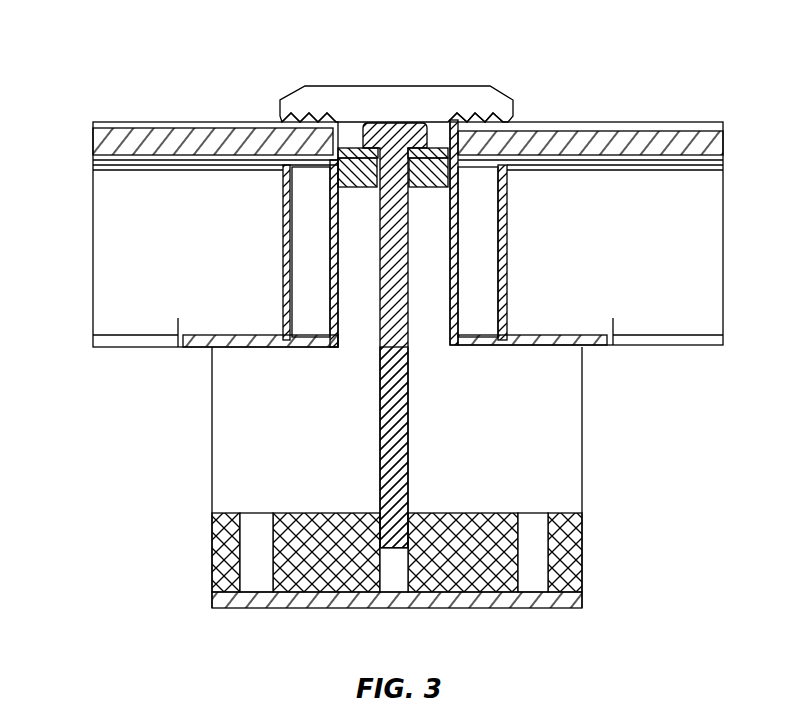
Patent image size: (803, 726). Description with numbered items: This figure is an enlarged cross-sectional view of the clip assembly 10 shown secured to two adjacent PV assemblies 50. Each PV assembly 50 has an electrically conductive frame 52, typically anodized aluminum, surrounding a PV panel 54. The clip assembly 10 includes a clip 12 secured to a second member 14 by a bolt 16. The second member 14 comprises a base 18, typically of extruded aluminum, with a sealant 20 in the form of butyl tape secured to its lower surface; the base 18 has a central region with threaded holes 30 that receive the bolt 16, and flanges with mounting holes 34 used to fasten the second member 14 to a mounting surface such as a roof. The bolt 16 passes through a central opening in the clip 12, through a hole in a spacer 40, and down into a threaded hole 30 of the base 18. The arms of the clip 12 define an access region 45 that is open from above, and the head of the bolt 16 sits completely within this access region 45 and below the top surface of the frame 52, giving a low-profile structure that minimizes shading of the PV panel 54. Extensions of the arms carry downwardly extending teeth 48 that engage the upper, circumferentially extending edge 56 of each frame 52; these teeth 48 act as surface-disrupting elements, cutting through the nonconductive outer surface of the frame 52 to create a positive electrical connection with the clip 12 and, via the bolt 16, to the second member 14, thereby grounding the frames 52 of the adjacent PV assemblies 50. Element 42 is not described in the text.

The clip assembly 10 is at (530, 50).
The clip 12 is at (440, 80).
The second member 14 is at (625, 470).
The bolt 16 is at (378, 440).
The base 18 is at (590, 538).
The sealant 20 is at (575, 600).
The threaded hole 30 is at (392, 578).
The mounting hole 34 is at (533, 582).
The spacer 40 is at (353, 186).
The nut 42 is at (352, 142).
The access region 45 is at (395, 113).
The teeth 48 is at (503, 138).
The PV assembly 50 is at (139, 115).
The frame 52 is at (598, 348).
The PV panel 54 is at (93, 140).
The upper circumferentially extending edge 56 is at (523, 137).